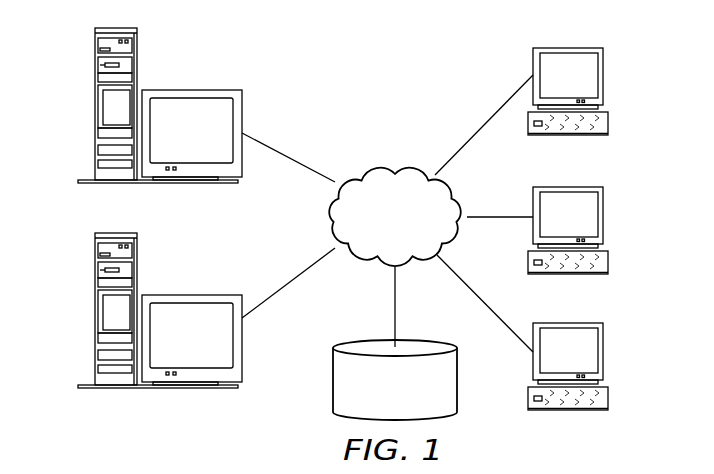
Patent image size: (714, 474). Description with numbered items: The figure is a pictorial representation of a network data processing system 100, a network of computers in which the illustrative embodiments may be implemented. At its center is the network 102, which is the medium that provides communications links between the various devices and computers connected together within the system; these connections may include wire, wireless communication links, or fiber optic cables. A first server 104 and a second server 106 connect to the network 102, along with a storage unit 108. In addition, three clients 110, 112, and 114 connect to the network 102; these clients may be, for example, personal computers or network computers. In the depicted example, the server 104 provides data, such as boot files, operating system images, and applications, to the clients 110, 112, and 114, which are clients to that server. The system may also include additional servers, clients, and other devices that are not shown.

The network data processing system 100 is at (448, 62).
The network 102 is at (368, 168).
The server 104 is at (95, 106).
The server 106 is at (95, 311).
The storage unit 108 is at (333, 390).
The client 110 is at (603, 76).
The client 112 is at (603, 215).
The client 114 is at (603, 352).